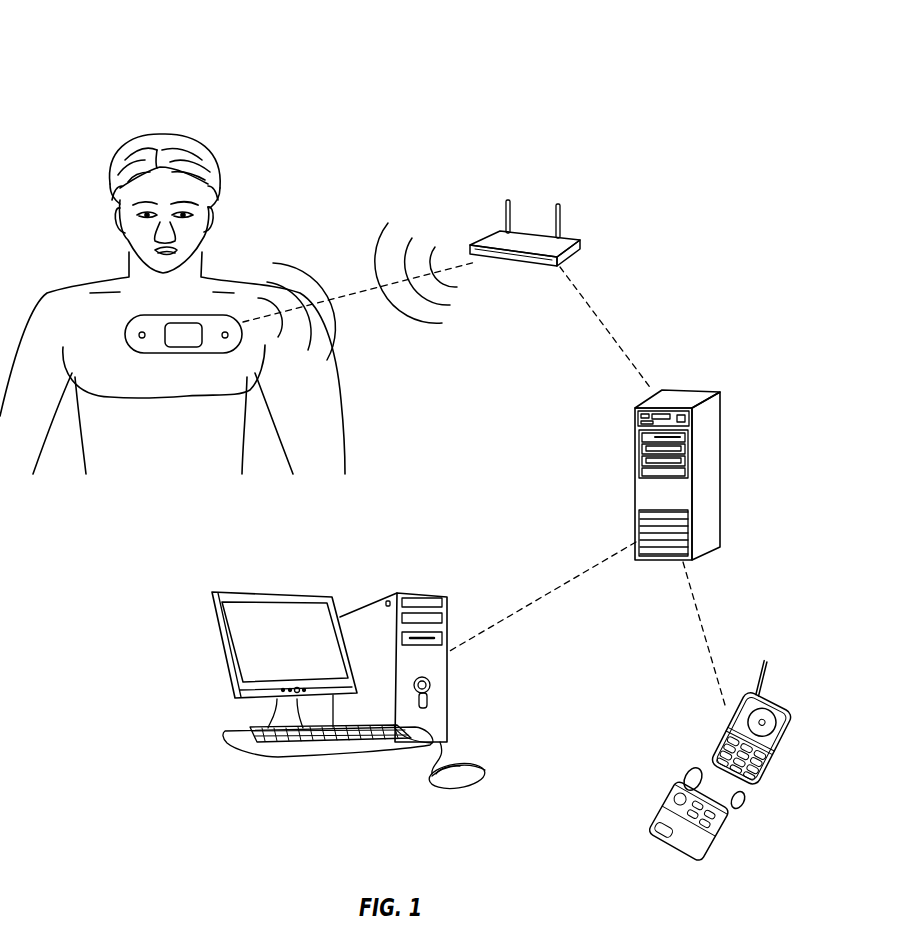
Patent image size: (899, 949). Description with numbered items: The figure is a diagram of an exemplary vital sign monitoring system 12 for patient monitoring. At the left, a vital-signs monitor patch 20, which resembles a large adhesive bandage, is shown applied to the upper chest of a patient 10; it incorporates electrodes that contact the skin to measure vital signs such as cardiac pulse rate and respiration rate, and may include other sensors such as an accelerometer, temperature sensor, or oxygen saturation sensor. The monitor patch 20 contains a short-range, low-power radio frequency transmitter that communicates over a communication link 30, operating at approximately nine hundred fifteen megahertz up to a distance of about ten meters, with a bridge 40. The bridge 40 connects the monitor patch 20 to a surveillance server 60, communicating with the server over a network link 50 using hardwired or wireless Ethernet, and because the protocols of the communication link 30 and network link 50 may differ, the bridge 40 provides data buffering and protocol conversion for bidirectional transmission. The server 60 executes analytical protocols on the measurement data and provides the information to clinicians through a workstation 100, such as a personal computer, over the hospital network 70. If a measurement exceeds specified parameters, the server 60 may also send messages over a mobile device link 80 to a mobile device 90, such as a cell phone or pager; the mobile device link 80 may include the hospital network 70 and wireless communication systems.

The vital sign monitoring system 12 is at (107, 46).
The patient 10 is at (160, 133).
The vital-signs monitor patch 20 is at (160, 353).
The communication link 30 is at (341, 293).
The bridge 40 is at (522, 242).
The network link 50 is at (623, 324).
The surveillance server 60 is at (682, 399).
The hospital network 70 is at (527, 604).
The mobile device link 80 is at (702, 623).
The mobile device 90 is at (655, 843).
The workstation 100 is at (258, 638).